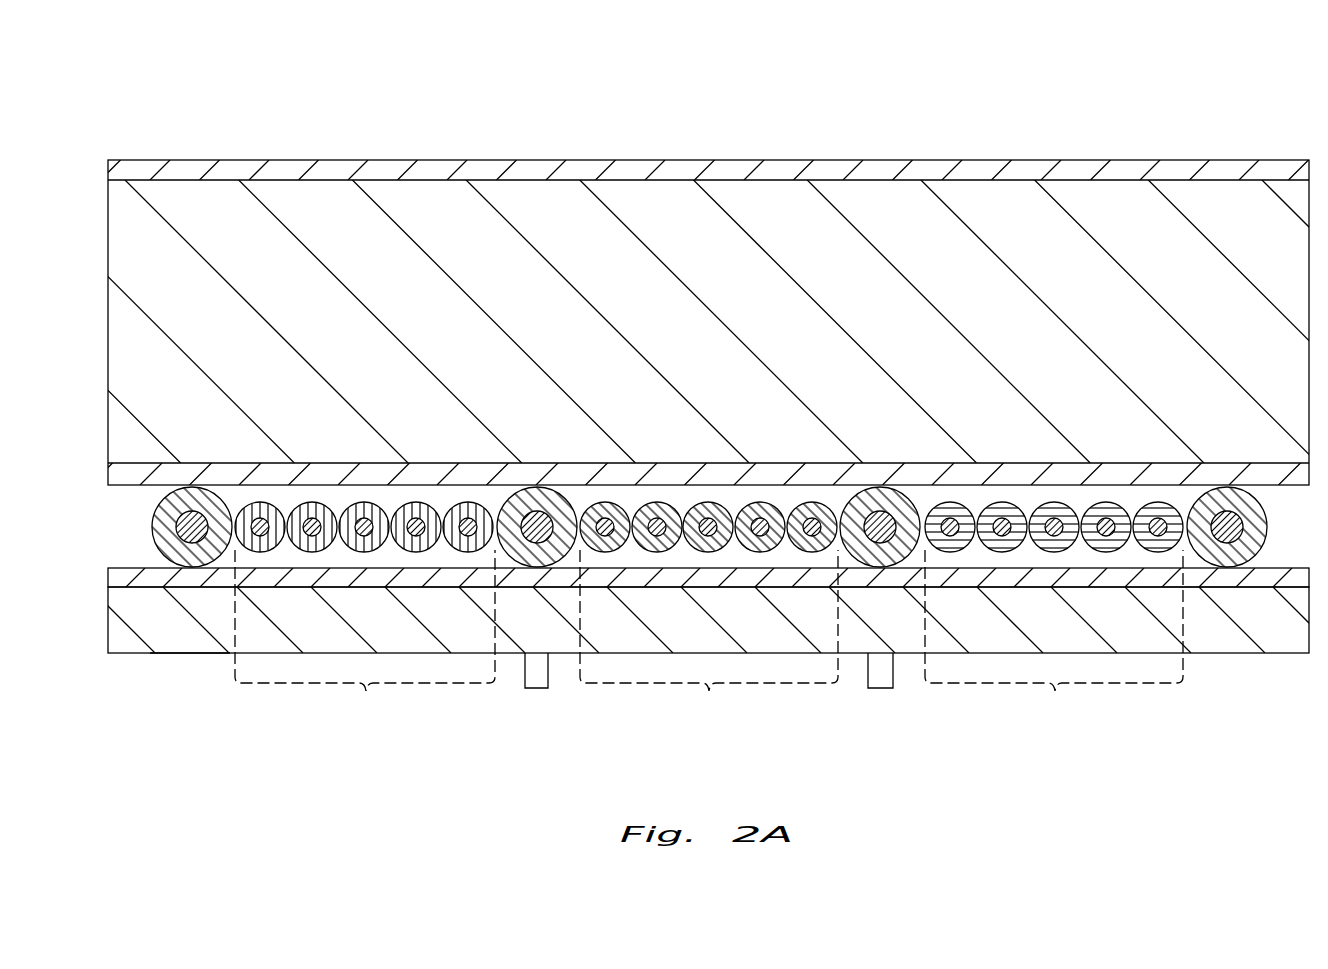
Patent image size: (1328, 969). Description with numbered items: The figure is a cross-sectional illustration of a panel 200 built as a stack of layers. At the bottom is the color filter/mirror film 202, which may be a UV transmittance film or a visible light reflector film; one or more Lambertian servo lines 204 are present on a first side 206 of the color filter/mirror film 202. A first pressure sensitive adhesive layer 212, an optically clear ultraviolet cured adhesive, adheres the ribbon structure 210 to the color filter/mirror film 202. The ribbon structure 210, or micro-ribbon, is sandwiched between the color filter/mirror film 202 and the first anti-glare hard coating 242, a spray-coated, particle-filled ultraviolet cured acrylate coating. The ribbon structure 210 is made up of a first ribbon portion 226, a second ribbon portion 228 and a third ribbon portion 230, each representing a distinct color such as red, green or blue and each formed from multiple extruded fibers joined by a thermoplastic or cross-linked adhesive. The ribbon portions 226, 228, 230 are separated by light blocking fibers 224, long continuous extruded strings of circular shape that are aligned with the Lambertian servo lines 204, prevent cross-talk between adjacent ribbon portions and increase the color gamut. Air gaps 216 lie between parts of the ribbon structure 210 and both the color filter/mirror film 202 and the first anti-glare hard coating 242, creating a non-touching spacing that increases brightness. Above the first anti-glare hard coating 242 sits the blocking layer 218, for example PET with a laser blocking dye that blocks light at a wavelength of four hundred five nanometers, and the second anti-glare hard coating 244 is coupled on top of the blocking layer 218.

The panel 200 is at (123, 70).
The second anti-glare hard coating 244 is at (118, 172).
The blocking layer 218 is at (118, 334).
The first anti-glare hard coating 242 is at (118, 476).
The ribbon structure 210 is at (93, 483).
The light blocking fibers 224 is at (192, 492).
The air gaps 216 is at (760, 492).
The first ribbon portion 226 is at (365, 636).
The second ribbon portion 228 is at (709, 636).
The third ribbon portion 230 is at (1054, 636).
The first pressure sensitive adhesive layer 212 is at (118, 578).
The color filter/mirror film 202 is at (118, 631).
The first side 206 is at (190, 655).
The Lambertian servo lines 204 is at (535, 689).